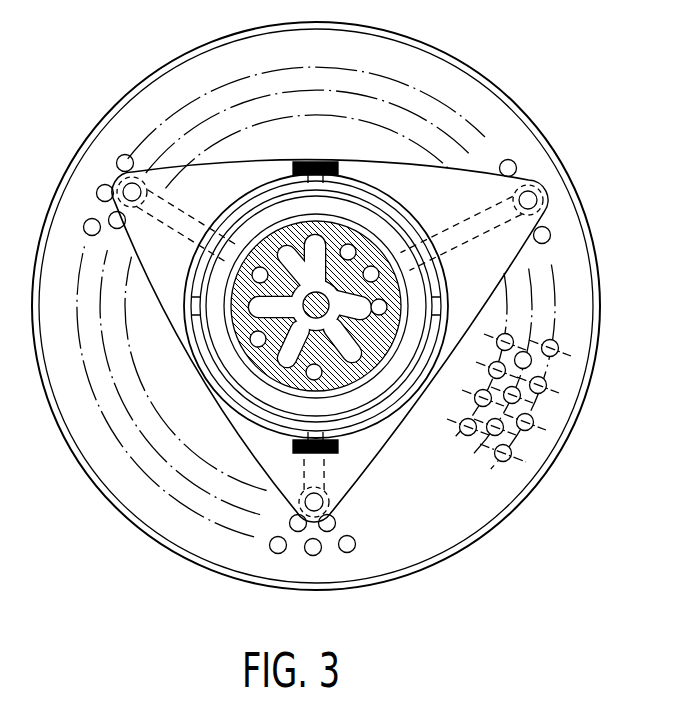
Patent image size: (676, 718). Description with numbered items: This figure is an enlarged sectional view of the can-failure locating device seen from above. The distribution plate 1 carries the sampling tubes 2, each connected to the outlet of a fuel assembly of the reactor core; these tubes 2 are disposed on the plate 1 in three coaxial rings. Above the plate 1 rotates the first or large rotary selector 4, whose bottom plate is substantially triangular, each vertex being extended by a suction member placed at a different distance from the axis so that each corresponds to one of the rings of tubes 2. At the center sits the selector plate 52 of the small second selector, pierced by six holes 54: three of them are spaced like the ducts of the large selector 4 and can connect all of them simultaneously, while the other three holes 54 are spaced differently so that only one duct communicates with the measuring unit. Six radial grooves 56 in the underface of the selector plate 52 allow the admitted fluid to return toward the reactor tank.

The distribution plate 1 is at (424, 66).
The sampling tubes 2 is at (352, 549).
The first rotary selector 4 is at (456, 168).
The selector plate 52 is at (346, 290).
The holes 54 is at (258, 339).
The radial grooves 56 is at (322, 236).